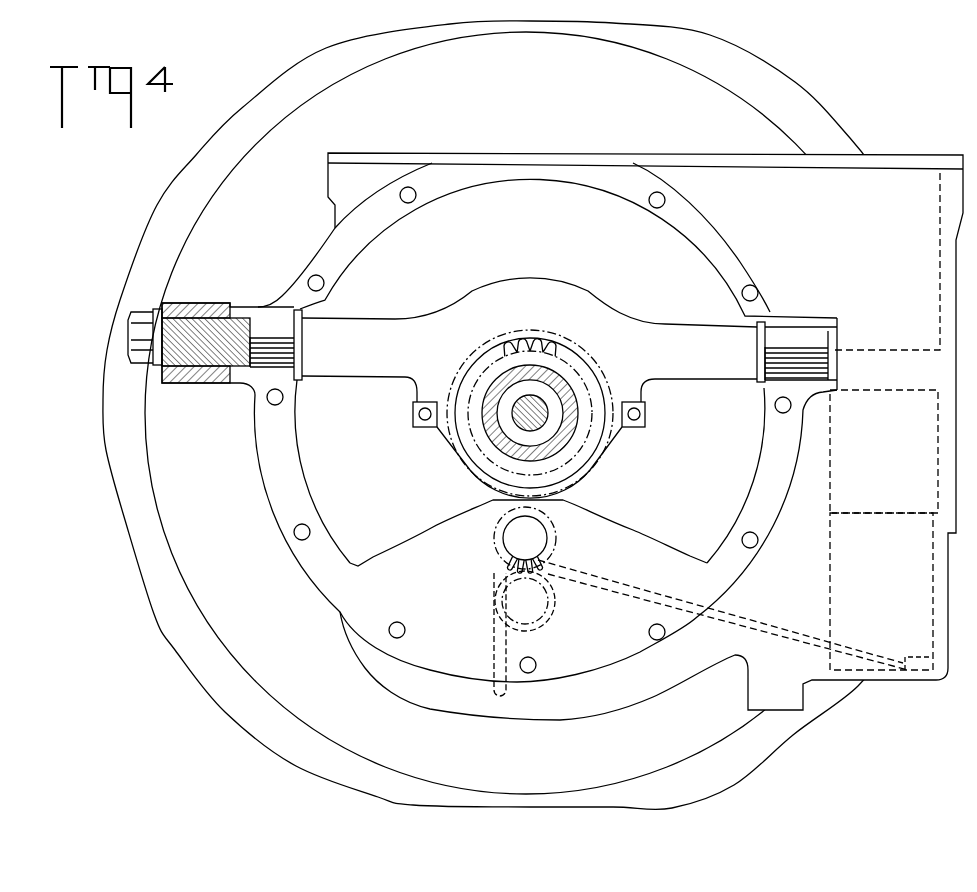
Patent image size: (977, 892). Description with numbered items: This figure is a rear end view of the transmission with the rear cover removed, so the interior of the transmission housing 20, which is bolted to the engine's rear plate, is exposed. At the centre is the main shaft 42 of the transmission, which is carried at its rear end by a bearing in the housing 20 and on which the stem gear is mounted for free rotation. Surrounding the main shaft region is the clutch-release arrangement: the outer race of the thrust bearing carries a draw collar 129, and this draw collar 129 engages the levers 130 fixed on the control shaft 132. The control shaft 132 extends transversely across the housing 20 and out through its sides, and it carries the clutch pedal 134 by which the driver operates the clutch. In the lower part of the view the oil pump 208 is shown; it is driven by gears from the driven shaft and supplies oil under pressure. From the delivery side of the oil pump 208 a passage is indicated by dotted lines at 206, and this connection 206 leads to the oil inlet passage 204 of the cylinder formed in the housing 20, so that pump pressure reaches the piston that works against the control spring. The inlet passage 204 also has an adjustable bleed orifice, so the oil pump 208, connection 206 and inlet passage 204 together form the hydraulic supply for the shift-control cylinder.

The transmission housing 20 is at (788, 724).
The main shaft 42 is at (545, 408).
The draw collar 129 is at (600, 460).
The levers 130 is at (413, 413).
The control shaft 132 is at (543, 287).
The clutch pedal 134 is at (190, 303).
The oil inlet passage 204 is at (917, 672).
The dotted-line connection 206 is at (758, 622).
The oil pump 208 is at (552, 618).